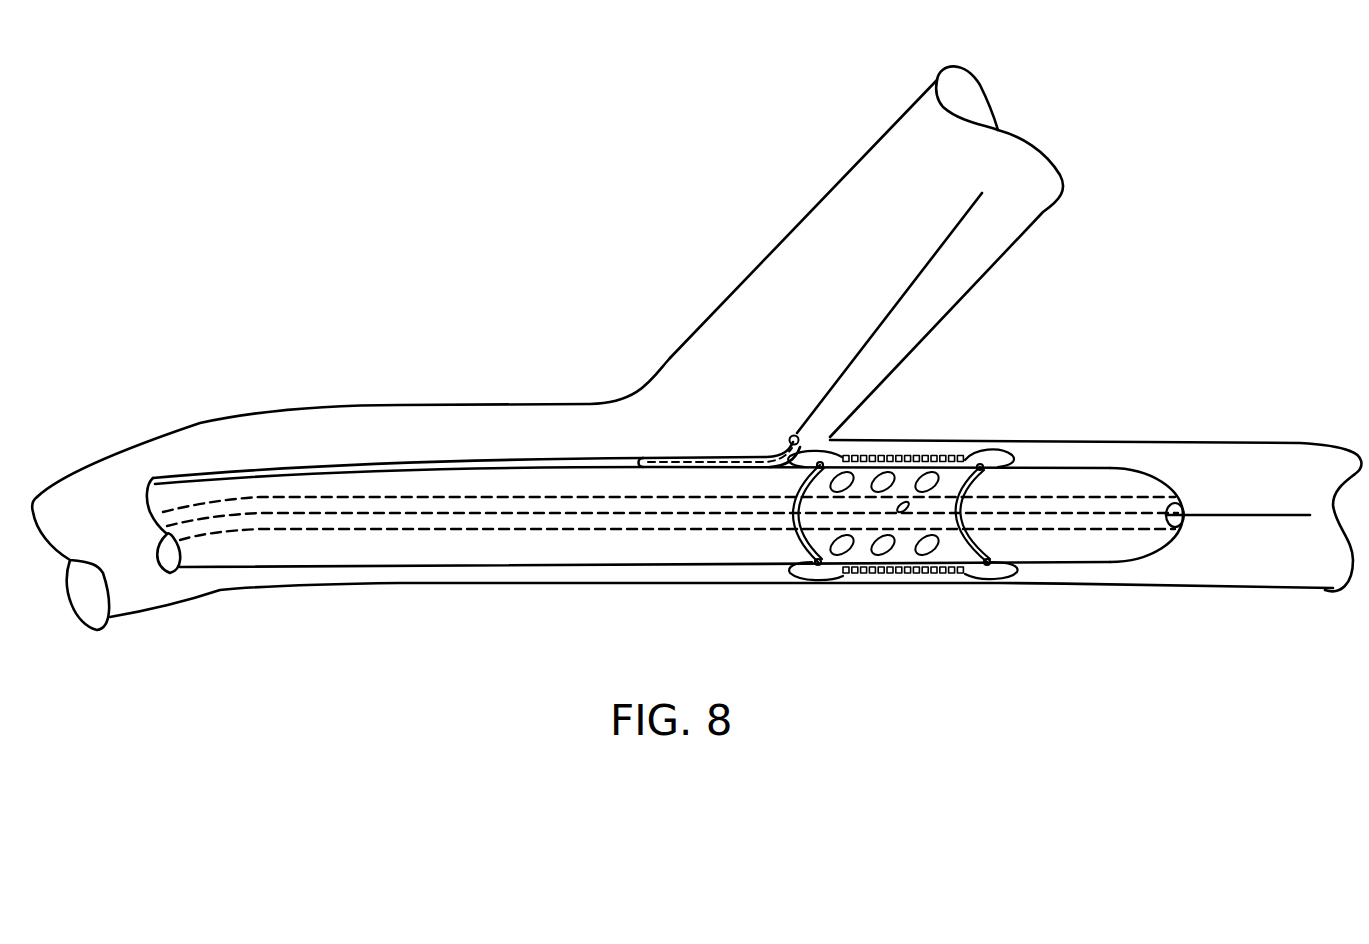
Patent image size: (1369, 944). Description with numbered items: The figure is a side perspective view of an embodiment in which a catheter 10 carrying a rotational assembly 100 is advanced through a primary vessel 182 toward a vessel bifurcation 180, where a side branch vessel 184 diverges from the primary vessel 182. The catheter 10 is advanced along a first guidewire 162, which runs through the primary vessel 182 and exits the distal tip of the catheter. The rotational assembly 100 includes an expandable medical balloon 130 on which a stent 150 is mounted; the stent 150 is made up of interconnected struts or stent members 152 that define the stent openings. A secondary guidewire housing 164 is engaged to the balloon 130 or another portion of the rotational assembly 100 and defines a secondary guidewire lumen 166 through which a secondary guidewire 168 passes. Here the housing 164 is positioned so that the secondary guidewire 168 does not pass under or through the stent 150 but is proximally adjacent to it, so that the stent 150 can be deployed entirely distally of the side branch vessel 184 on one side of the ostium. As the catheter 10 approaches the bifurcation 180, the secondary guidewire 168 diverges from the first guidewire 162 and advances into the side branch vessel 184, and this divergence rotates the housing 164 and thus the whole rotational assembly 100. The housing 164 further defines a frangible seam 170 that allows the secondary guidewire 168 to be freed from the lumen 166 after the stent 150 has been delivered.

The catheter 10 is at (399, 585).
The rotational assembly 100 is at (960, 604).
The expandable medical balloon 130 is at (975, 450).
The stent 150 is at (900, 592).
The stent members 152 is at (847, 575).
The first guidewire 162 is at (1278, 519).
The secondary guidewire housing 164 is at (690, 456).
The secondary guidewire lumen 166 is at (640, 459).
The secondary guidewire 168 is at (882, 321).
The seam 170 is at (742, 458).
The vessel bifurcation 180 is at (912, 400).
The primary vessel 182 is at (497, 584).
The side branch vessel 184 is at (886, 156).